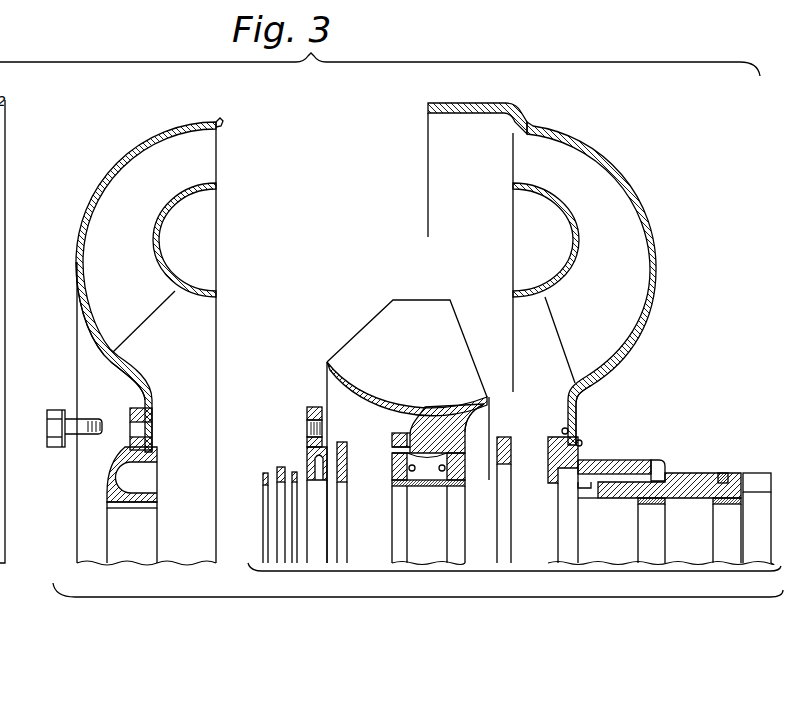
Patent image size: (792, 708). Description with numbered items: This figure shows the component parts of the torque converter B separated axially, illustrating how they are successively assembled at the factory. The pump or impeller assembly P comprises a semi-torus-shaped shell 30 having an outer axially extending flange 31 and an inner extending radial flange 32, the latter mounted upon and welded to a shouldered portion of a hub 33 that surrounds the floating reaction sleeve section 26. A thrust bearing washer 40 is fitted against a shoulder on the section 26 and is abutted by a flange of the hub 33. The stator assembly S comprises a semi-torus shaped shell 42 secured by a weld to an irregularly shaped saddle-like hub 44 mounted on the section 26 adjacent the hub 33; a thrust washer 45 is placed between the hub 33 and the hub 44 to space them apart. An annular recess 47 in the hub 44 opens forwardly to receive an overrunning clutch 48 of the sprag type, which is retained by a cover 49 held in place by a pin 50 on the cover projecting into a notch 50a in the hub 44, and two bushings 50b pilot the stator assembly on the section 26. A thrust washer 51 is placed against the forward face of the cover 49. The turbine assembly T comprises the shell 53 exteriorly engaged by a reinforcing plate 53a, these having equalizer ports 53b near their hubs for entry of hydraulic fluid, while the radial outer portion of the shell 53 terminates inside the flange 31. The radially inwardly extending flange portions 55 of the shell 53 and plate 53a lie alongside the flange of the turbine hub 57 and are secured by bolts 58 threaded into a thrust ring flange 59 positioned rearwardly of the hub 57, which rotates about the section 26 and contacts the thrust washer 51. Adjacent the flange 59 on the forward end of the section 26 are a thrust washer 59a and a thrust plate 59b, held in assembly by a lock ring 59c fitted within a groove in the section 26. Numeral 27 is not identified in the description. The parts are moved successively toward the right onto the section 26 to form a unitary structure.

The turbine shell 53 is at (112, 176).
The reinforcing plate 53a is at (88, 336).
The equalizer ports 53b is at (120, 378).
The flange portions 55 is at (153, 412).
The turbine hub 57 is at (118, 459).
The bolts 58 is at (56, 406).
The thrust ring flange 59 is at (312, 406).
The thrust washer 59a is at (293, 471).
The thrust plate 59b is at (277, 468).
The lock ring 59c is at (263, 480).
The thrust washer 51 is at (347, 482).
The stator shell 42 is at (387, 376).
The stator hub 44 is at (437, 417).
The annular recess 47 is at (466, 455).
The overrunning clutch 48 is at (463, 427).
The cover 49 is at (392, 471).
The pin 50 is at (392, 444).
The notch 50a is at (407, 436).
The bushings 50b is at (452, 487).
The thrust washer 45 is at (532, 428).
The outer axially extending flange 31 is at (477, 103).
The pump shell 30 is at (650, 231).
The inner radial flange 32 is at (578, 410).
The pump hub 33 is at (628, 460).
The floating reaction sleeve section 26 is at (689, 482).
The thrust bearing washer 40 is at (735, 457).
The end ring 27 is at (758, 473).
The turbine assembly T is at (131, 237).
The stator assembly S is at (423, 331).
The pump or impeller assembly P is at (615, 274).
The torque converter B is at (608, 153).